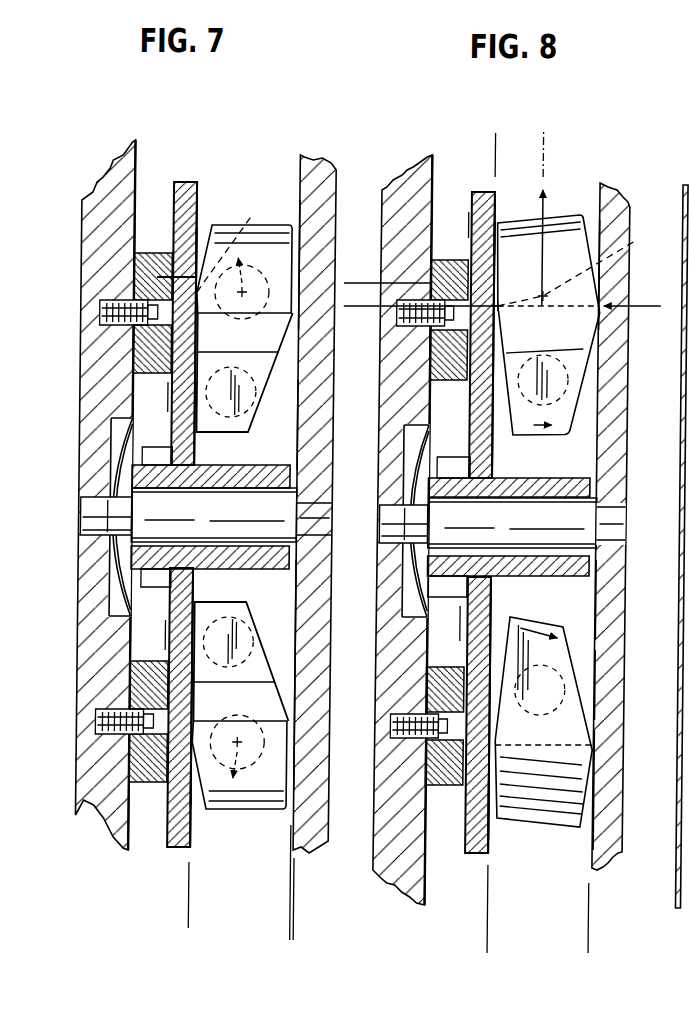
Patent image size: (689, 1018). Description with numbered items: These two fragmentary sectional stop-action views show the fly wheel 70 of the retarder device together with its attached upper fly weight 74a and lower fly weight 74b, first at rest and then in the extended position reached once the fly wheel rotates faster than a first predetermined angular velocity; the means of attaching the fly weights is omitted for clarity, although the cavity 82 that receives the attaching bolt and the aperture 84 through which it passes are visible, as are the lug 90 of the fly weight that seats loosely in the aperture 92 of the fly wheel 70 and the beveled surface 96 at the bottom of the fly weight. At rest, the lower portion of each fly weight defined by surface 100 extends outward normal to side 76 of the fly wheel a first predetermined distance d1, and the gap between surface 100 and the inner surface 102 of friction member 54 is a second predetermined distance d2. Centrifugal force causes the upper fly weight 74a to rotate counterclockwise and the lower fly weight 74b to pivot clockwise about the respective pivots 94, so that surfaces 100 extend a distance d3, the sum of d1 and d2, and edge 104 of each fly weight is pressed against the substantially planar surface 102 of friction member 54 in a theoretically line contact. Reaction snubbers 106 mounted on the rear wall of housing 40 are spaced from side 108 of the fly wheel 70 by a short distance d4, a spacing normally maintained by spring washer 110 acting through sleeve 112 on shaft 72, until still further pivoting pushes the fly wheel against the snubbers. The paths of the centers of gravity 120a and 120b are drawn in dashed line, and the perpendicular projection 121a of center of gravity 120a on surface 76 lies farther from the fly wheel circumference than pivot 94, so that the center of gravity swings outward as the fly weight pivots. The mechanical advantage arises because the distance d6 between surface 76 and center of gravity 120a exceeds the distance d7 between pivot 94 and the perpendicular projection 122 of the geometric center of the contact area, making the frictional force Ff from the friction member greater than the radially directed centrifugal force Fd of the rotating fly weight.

In FIG. 7, the housing 40 is at (126, 162).
In FIG. 7, the friction member 54 is at (331, 678).
In FIG. 8, the friction member 54 is at (624, 692).
In FIG. 7, the fly wheel 70 is at (174, 178).
In FIG. 8, the fly wheel 70 is at (475, 858).
In FIG. 7, the shaft 72 is at (328, 513).
In FIG. 8, the shaft 72 is at (628, 518).
In FIG. 7, the upper fly weight 74a is at (226, 228).
In FIG. 8, the upper fly weight 74a is at (557, 409).
In FIG. 7, the lower fly weight 74b is at (260, 803).
In FIG. 8, the lower fly weight 74b is at (551, 826).
In FIG. 7, the side of fly wheel 76 is at (200, 192).
In FIG. 8, the side of fly wheel 76 is at (498, 200).
In FIG. 7, the cavity 82 is at (242, 517).
In FIG. 7, the aperture 84 is at (200, 635).
In FIG. 7, the lug 90 is at (174, 320).
In FIG. 8, the lug 90 is at (474, 387).
In FIG. 7, the aperture of fly wheel 92 is at (172, 277).
In FIG. 8, the aperture of fly wheel 92 is at (483, 760).
In FIG. 7, the pivot 94 is at (197, 277).
In FIG. 8, the pivot 94 is at (498, 238).
In FIG. 7, the beveled surface 96 is at (199, 240).
In FIG. 8, the beveled surface 96 is at (500, 805).
In FIG. 7, the surface 100 is at (324, 187).
In FIG. 8, the surface 100 is at (608, 808).
In FIG. 7, the inner surface of friction member 102 is at (297, 399).
In FIG. 8, the inner surface of friction member 102 is at (594, 619).
In FIG. 7, the edge 104 is at (298, 316).
In FIG. 8, the edge 104 is at (604, 312).
In FIG. 7, the reaction snubbers 106 is at (155, 358).
In FIG. 8, the reaction snubbers 106 is at (434, 270).
In FIG. 7, the side of fly wheel 108 is at (172, 184).
In FIG. 8, the side of fly wheel 108 is at (475, 192).
In FIG. 7, the spring washer 110 is at (112, 448).
In FIG. 8, the spring washer 110 is at (410, 432).
In FIG. 7, the sleeve 112 is at (246, 480).
In FIG. 8, the sleeve 112 is at (520, 480).
In FIG. 7, the center of gravity 120a is at (235, 279).
In FIG. 8, the center of gravity 120a is at (591, 263).
In FIG. 7, the center of gravity 120b is at (242, 739).
In FIG. 7, the perpendicular projection 121a is at (240, 239).
In FIG. 8, the perpendicular projection 122 is at (502, 302).
In FIG. 7, the first predetermined distance d1 is at (299, 897).
In FIG. 7, the second predetermined distance d2 is at (323, 925).
In FIG. 8, the predetermined distance d3 is at (598, 947).
In FIG. 7, the short distance d4 is at (199, 397).
In FIG. 8, the short distance d4 is at (497, 228).
In FIG. 8, the distance d6 is at (545, 142).
In FIG. 8, the distance d7 is at (361, 326).
In FIG. 8, the force Fd is at (548, 208).
In FIG. 8, the friction force Ff is at (651, 306).